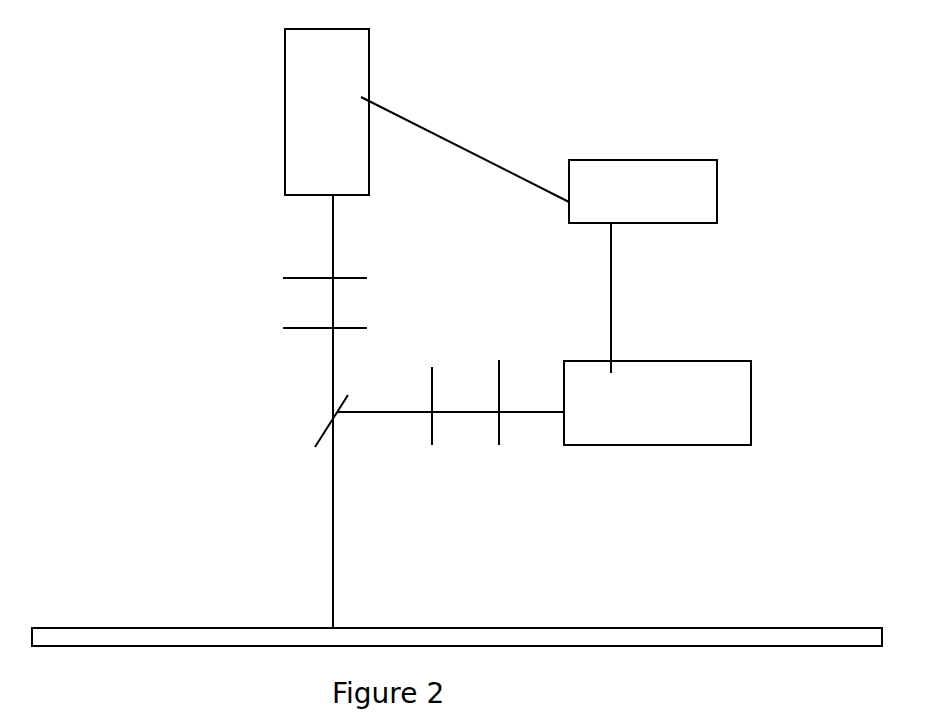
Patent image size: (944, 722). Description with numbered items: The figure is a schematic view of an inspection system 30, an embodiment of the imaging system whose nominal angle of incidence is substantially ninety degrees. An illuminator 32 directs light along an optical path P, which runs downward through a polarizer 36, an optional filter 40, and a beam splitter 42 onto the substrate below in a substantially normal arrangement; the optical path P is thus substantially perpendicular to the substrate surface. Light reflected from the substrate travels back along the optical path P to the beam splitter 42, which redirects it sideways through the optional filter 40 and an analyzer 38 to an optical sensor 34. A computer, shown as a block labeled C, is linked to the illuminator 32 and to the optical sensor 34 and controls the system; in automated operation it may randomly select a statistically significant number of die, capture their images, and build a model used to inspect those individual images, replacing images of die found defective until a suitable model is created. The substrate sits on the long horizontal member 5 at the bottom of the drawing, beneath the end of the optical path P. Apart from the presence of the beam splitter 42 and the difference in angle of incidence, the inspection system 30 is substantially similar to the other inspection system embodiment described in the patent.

The inspection system 30 is at (566, 115).
The illuminator 32 is at (374, 64).
The optical sensor 34 is at (652, 362).
The polarizer 36 is at (376, 279).
The analyzer 38 is at (502, 348).
The filter 40 is at (372, 332).
The beam splitter 42 is at (328, 429).
The optical path P is at (328, 530).
The substrate stage 5 is at (593, 627).